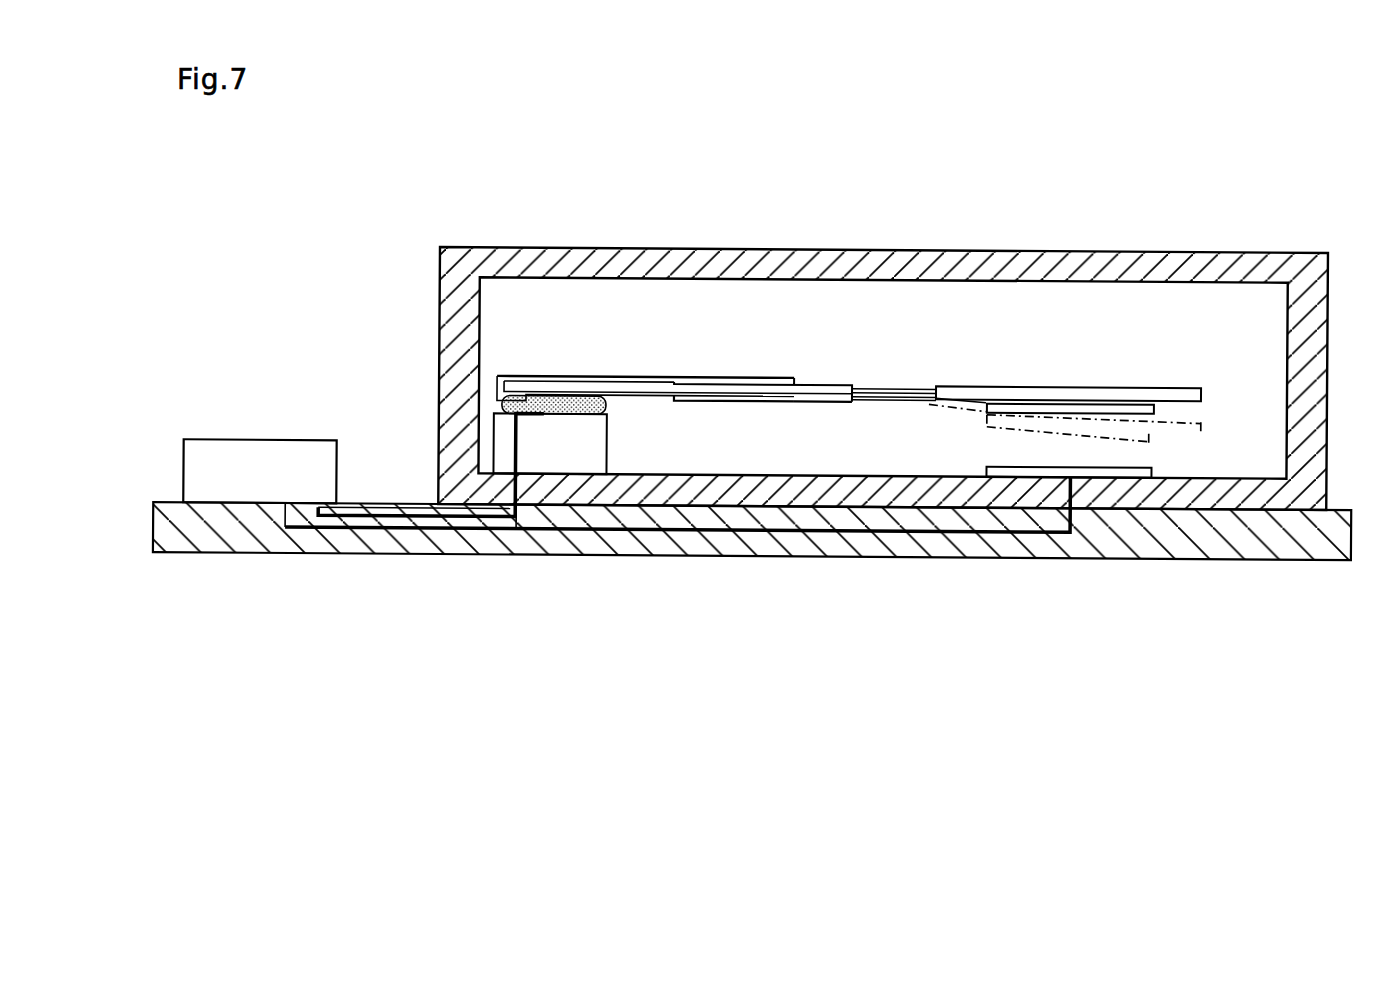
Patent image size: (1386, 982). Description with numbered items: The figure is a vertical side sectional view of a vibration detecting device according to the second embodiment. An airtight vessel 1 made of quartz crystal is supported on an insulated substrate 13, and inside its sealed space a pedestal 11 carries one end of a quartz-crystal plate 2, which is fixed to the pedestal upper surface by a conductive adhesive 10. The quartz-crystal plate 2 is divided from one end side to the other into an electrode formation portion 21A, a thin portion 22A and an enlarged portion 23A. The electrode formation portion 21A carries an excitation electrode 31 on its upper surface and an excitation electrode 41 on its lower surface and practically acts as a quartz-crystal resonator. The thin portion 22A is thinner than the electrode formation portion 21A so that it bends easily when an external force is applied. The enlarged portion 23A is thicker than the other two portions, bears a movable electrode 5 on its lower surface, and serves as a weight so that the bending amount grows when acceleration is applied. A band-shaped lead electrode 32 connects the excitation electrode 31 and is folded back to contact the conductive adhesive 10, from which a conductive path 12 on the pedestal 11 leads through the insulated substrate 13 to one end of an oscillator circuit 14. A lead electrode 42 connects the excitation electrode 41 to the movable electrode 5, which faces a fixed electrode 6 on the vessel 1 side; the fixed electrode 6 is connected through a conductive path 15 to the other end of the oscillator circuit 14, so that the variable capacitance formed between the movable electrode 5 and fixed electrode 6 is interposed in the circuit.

The airtight vessel 1 is at (1234, 247).
The quartz-crystal plate 2 is at (1060, 343).
The movable electrode 5 is at (1150, 402).
The fixed electrode 6 is at (1150, 463).
The conductive adhesive 10 is at (503, 404).
The pedestal 11 is at (603, 456).
The conductive path 12 is at (377, 503).
The insulated substrate 13 is at (213, 554).
The oscillator circuit 14 is at (262, 441).
The conductive path 15 is at (938, 553).
The electrode formation portion 21A is at (786, 388).
The thin portion 22A is at (905, 387).
The enlarged portion 23A is at (998, 383).
The excitation electrode 31 is at (725, 376).
The lead electrode 32 is at (596, 376).
The excitation electrode 41 is at (751, 400).
The lead electrode 42 is at (828, 400).